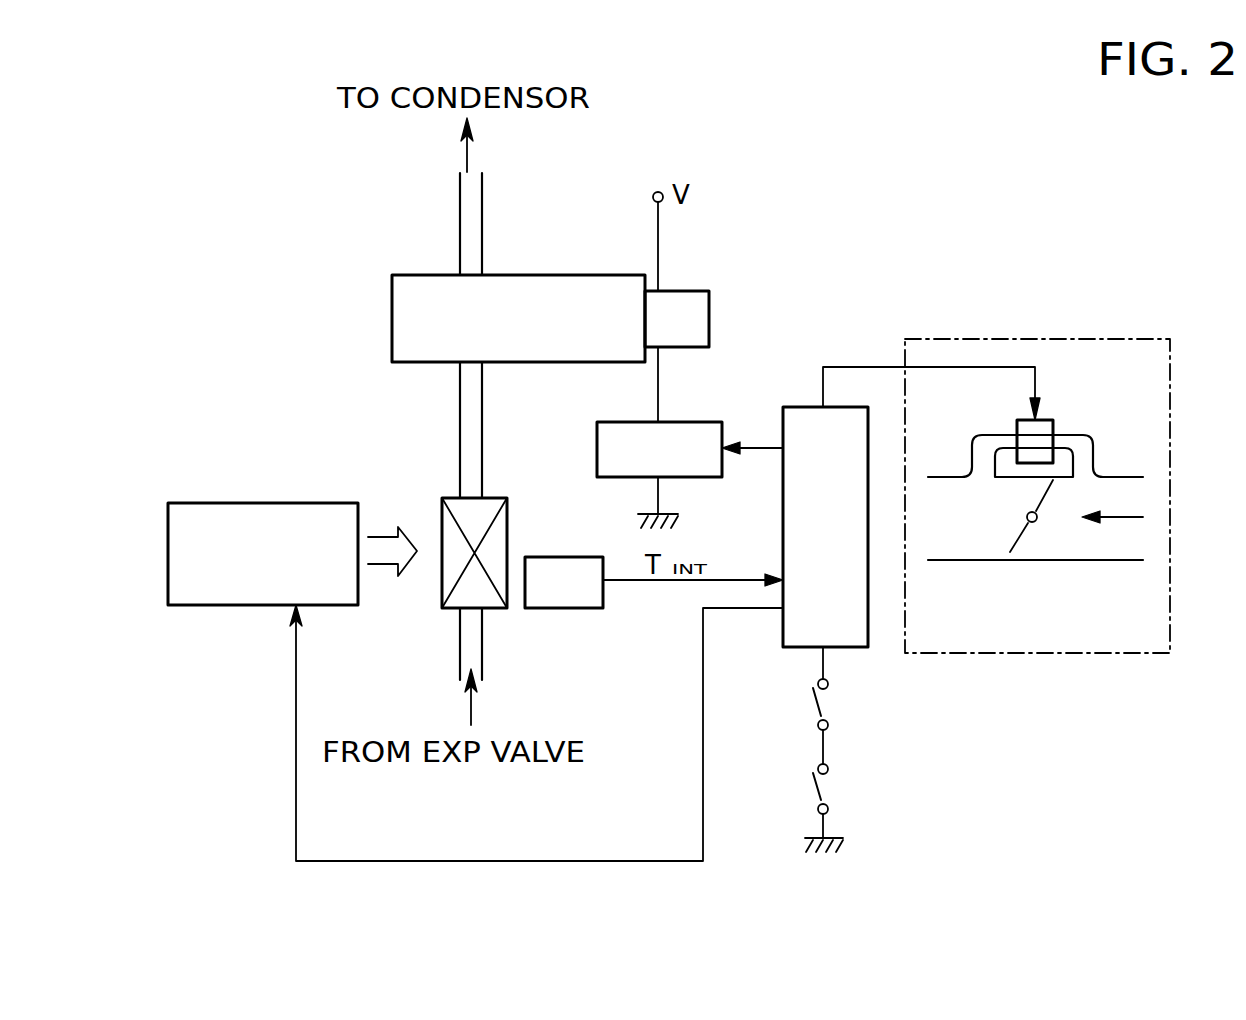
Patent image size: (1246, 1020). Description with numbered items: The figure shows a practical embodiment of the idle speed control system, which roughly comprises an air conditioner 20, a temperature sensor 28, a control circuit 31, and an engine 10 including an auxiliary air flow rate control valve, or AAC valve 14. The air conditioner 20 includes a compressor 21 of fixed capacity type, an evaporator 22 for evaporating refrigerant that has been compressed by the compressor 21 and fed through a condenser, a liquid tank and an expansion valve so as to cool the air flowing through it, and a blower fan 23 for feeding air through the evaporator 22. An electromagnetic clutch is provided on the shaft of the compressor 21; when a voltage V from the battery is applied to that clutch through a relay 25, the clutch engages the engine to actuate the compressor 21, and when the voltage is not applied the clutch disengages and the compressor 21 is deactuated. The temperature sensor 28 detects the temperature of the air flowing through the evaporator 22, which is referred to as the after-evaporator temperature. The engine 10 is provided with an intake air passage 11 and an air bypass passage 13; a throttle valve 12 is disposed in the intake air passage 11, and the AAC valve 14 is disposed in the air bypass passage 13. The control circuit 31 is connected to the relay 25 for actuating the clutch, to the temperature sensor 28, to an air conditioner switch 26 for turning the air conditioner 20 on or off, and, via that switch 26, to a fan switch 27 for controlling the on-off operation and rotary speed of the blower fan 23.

The engine 10 is at (1033, 339).
The intake air passage 11 is at (1107, 560).
The throttle valve 12 is at (1027, 537).
The air bypass passage 13 is at (1093, 446).
The auxiliary air flow rate control valve 14 is at (1050, 418).
The air conditioner 20 is at (712, 312).
The compressor 21 is at (392, 326).
The evaporator 22 is at (497, 610).
The blower fan 23 is at (295, 503).
The relay 25 is at (693, 422).
The air conditioner switch 26 is at (826, 702).
The fan switch 27 is at (826, 790).
The temperature sensor 28 is at (605, 602).
The control circuit 31 is at (783, 638).